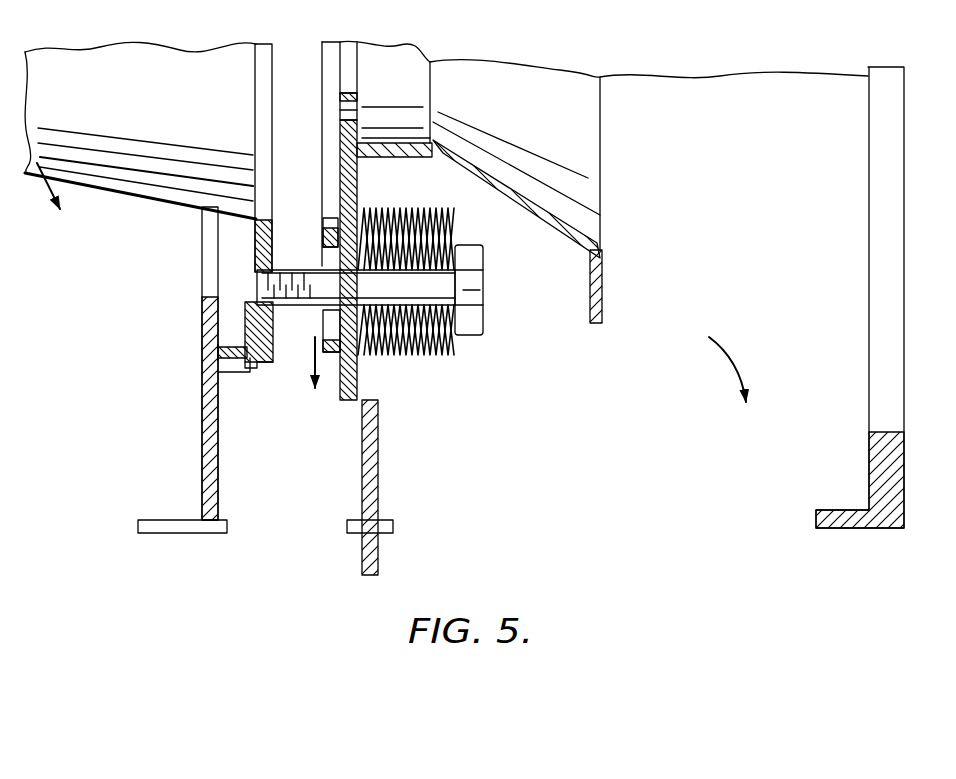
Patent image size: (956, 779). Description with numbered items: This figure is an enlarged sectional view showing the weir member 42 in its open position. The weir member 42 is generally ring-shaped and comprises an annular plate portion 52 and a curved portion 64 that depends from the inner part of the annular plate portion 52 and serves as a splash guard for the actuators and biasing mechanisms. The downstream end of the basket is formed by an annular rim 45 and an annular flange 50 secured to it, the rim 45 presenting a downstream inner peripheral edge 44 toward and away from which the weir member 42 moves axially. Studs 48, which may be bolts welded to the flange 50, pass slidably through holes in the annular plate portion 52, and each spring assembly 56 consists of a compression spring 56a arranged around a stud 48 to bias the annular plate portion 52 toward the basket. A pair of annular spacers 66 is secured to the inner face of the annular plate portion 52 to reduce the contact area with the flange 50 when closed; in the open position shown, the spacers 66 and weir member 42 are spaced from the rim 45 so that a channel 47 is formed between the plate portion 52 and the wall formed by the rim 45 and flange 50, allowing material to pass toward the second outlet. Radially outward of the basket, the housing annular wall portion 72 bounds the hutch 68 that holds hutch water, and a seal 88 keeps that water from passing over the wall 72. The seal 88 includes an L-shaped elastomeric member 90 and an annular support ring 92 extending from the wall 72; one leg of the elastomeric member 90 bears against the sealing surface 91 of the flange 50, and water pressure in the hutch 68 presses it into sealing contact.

The weir member 42 is at (622, 164).
The downstream inner peripheral edge 44 is at (263, 213).
The annular rim 45 is at (266, 62).
The channel 47 is at (309, 254).
The stud 48 is at (467, 290).
The annular flange 50 is at (258, 370).
The annular plate portion 52 is at (360, 172).
The spring assembly 56 is at (444, 306).
The compression spring 56a is at (410, 353).
The curved portion 64 is at (600, 215).
The spacer 66 is at (330, 222).
The hutch 68 is at (46, 319).
The annular wall portion 72 is at (203, 450).
The seal 88 is at (203, 356).
The elastomeric member 90 is at (220, 358).
The sealing surface 91 is at (260, 362).
The annular support ring 92 is at (223, 373).